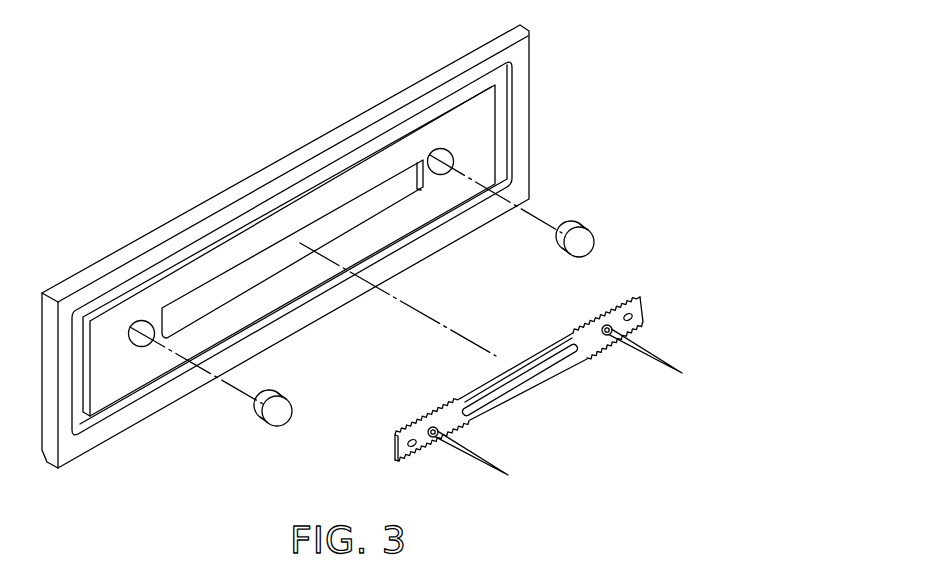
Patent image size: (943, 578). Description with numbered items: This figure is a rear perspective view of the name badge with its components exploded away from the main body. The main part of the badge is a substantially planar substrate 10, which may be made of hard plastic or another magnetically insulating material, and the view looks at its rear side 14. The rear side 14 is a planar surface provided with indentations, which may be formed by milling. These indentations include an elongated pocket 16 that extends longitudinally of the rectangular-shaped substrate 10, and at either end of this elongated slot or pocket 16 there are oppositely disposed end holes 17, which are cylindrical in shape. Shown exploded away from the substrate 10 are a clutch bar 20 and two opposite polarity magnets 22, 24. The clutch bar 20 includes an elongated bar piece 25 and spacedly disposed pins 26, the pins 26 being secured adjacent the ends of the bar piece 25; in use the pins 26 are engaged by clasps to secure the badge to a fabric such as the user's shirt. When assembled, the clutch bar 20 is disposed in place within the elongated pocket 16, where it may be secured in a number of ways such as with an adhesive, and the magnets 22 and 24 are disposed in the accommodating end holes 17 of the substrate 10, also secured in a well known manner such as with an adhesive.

The substrate 10 is at (362, 259).
The rear side 14 is at (524, 115).
The elongated pocket 16 is at (258, 255).
The end holes 17 is at (142, 320).
The clutch bar 20 is at (538, 402).
The magnet 22 is at (283, 418).
The magnet 24 is at (582, 242).
The elongated bar piece 25 is at (554, 340).
The pins 26 is at (471, 454).